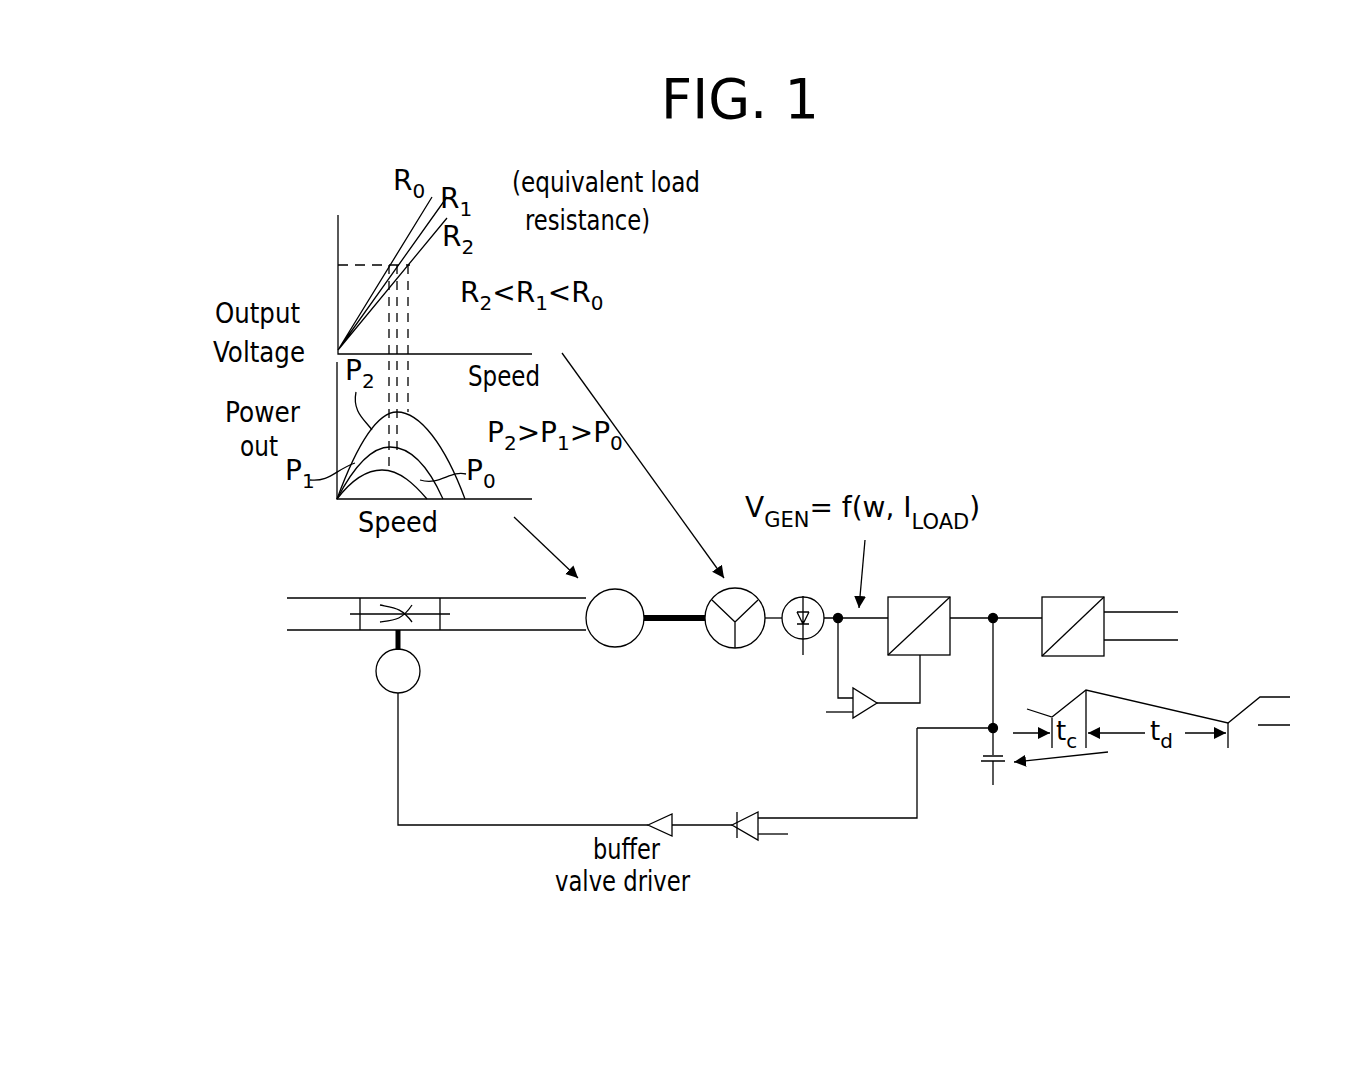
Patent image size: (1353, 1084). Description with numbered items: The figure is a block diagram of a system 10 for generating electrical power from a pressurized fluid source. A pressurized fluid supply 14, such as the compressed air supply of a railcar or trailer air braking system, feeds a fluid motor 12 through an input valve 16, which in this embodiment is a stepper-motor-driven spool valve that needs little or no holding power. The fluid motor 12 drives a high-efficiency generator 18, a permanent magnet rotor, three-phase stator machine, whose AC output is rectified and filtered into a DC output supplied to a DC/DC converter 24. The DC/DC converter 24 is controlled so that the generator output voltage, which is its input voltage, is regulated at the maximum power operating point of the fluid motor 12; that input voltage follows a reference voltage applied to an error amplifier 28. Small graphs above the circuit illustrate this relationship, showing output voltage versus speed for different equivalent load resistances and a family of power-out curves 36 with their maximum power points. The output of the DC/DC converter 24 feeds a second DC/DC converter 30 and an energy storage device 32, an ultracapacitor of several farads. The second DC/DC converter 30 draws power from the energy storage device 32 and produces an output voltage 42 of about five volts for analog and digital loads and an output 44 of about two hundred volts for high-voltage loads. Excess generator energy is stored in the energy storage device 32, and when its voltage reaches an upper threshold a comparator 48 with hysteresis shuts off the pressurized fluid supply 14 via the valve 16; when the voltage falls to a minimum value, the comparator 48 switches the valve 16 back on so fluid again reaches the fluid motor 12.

The system 10 is at (908, 392).
The fluid motor 12 is at (618, 589).
The pressurized fluid supply 14 is at (303, 598).
The input valve 16 is at (410, 598).
The generator 18 is at (738, 588).
The DC/DC converter 24 is at (950, 606).
The error amplifier 28 is at (866, 718).
The second DC/DC converter 30 is at (1042, 608).
The energy storage device 32 is at (980, 764).
The power output curves 36 is at (394, 469).
The output voltage 42 is at (1135, 640).
The output 44 is at (1142, 612).
The comparator with hysteresis 48 is at (738, 810).